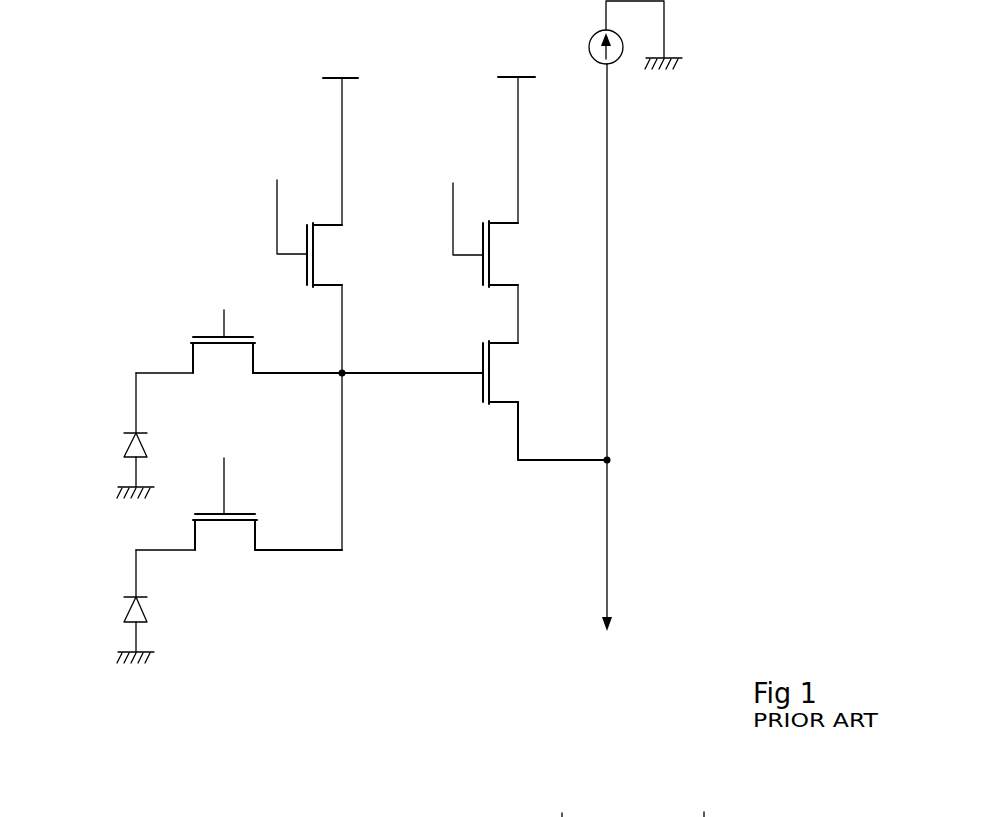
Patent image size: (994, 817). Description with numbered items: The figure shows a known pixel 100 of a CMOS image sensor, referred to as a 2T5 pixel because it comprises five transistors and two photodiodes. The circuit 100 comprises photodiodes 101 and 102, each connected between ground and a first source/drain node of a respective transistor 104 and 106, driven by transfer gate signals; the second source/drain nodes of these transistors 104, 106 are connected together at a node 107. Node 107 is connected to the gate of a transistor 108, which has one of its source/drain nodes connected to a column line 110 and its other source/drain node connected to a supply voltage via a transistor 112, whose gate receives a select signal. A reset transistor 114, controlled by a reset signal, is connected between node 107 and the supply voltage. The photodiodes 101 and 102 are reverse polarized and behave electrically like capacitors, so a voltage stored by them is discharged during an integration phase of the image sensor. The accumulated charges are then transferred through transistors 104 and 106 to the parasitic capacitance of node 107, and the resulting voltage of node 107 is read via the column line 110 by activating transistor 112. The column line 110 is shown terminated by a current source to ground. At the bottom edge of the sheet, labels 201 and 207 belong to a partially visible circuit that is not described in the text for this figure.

The pixel 100 is at (172, 114).
The photodiode 101 is at (122, 446).
The photodiode 102 is at (125, 610).
The transistor 104 is at (222, 357).
The transistor 106 is at (224, 540).
The node 107 is at (345, 376).
The transistor 108 is at (508, 371).
The column line 110 is at (607, 289).
The transistor 112 is at (500, 255).
The reset transistor 114 is at (320, 255).
The pixel circuit (partial, next figure) 201 is at (72, 812).
The node (partial, next figure) 207 is at (635, 802).